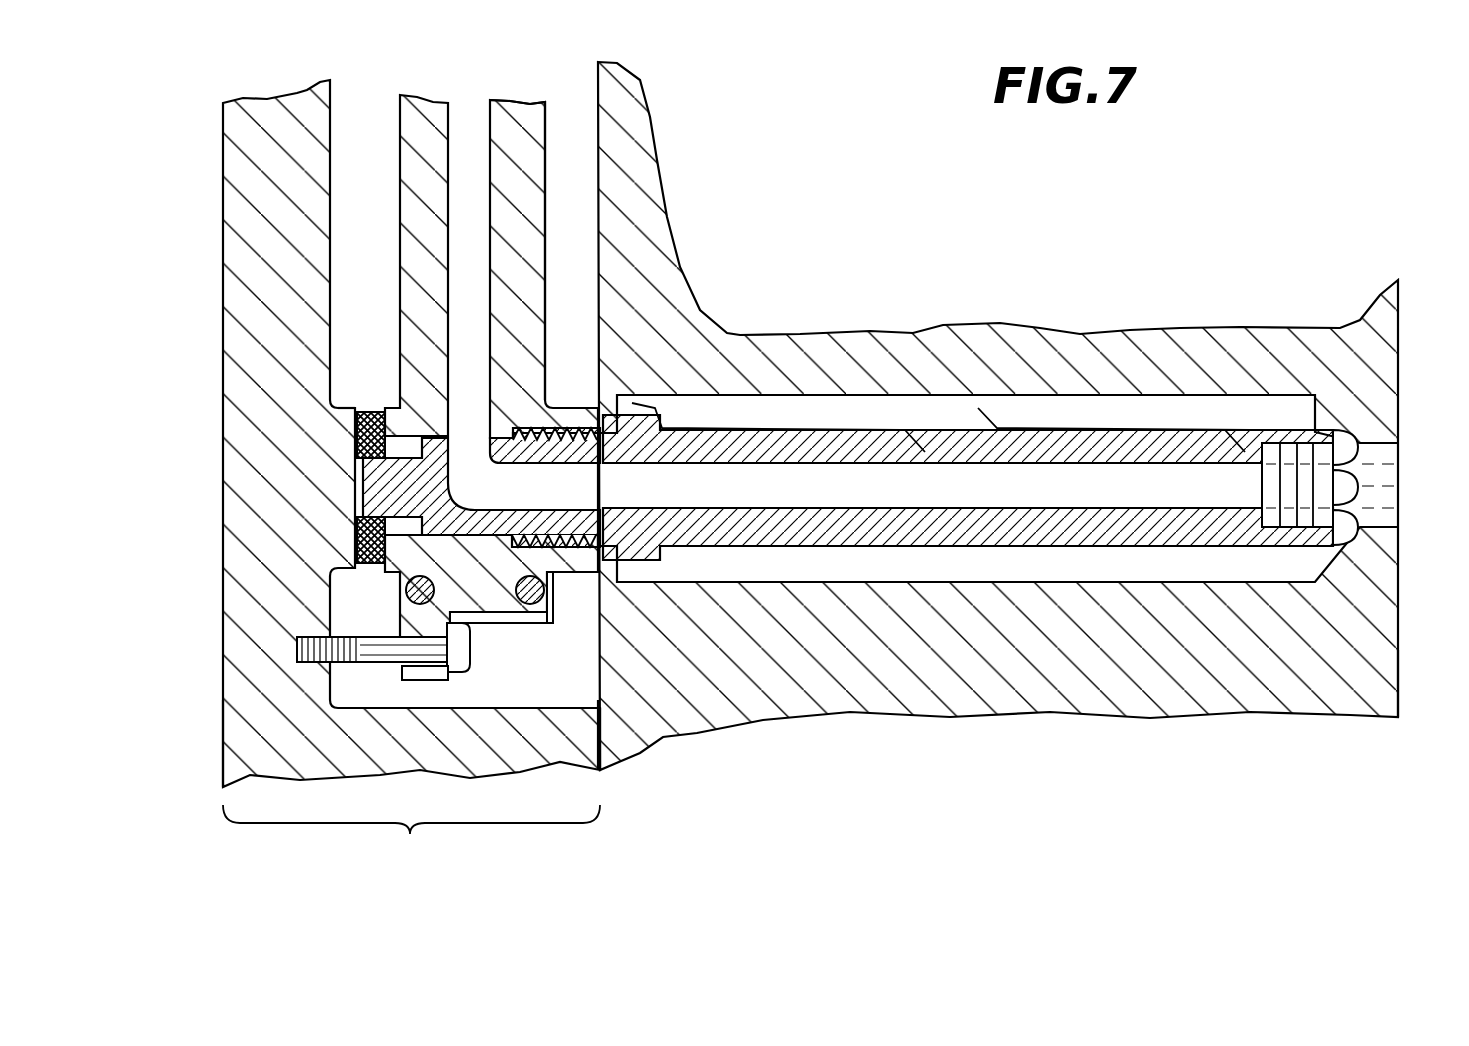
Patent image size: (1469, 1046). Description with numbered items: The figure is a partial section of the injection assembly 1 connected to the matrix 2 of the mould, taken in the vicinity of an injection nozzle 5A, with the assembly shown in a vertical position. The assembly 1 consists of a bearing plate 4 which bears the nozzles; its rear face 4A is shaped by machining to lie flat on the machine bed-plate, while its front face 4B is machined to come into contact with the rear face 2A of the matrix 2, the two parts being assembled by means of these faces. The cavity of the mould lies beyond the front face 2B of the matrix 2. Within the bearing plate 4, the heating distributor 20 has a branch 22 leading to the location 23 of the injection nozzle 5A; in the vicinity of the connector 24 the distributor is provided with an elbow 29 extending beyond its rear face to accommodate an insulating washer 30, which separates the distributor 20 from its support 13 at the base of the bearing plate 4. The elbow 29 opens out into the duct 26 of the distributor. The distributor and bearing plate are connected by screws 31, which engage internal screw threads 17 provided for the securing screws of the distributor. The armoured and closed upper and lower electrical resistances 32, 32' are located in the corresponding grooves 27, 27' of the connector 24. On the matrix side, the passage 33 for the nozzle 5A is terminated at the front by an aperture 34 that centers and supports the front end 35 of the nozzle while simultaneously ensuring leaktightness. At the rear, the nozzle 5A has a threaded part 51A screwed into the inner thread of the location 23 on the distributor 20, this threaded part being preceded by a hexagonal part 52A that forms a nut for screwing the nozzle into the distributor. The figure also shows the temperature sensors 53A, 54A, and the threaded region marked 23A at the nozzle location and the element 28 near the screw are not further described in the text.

The injection assembly 1 is at (411, 838).
The matrix 2 is at (735, 340).
The rear face of the matrix 2A is at (608, 736).
The front face of the matrix 2B is at (1408, 697).
The bearing plate 4 is at (236, 294).
The rear face of the bearing plate 4A is at (223, 768).
The front face of the bearing plate 4B is at (592, 748).
The injection nozzle 5A is at (945, 527).
The support 13 is at (350, 418).
The internal screw threads 17 is at (302, 674).
The heating distributor 20 is at (517, 250).
The branch 22 is at (540, 168).
The location of the injection nozzle 23 is at (594, 394).
The threaded portion 23A is at (560, 424).
The connector 24 is at (355, 553).
The duct of the distributor 26 is at (463, 178).
The groove 27 is at (556, 602).
The groove 27' is at (385, 596).
The nut 28 is at (433, 673).
The elbow 29 is at (372, 468).
The insulating washer 30 is at (366, 410).
The screw 31 is at (378, 650).
The upper electrical resistance 32 is at (491, 608).
The lower electrical resistance 32' is at (512, 622).
The passage 33 is at (835, 400).
The aperture 34 is at (1378, 436).
The front end of the nozzle 35 is at (1372, 527).
The threaded part 51A is at (544, 442).
The hexagonal part 52A is at (660, 553).
The temperature sensor 53A is at (690, 432).
The temperature sensor 54A is at (1035, 428).